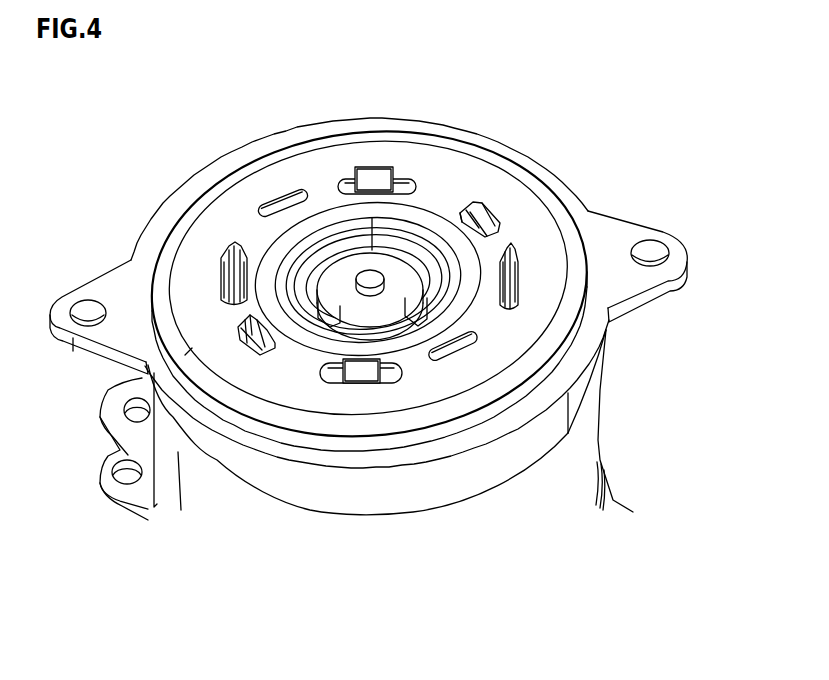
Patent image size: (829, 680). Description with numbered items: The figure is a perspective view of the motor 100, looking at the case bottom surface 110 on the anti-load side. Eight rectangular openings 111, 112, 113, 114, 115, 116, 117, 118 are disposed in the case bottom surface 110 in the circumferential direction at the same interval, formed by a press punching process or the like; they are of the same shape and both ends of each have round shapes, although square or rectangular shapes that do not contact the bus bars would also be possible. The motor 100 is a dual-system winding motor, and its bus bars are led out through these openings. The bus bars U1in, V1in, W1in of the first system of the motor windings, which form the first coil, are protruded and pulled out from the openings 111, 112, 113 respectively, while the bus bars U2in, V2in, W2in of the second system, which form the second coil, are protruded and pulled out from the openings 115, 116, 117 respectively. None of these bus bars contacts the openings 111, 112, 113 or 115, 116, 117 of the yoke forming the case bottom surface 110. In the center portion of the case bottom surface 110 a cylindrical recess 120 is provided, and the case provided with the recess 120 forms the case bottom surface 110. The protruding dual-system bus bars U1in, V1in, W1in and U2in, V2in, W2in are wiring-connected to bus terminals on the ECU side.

The motor 100 is at (202, 503).
The case bottom surface 110 is at (312, 162).
The opening 111 is at (215, 274).
The opening 112 is at (270, 352).
The opening 113 is at (327, 381).
The opening 114 is at (450, 358).
The opening 115 is at (513, 305).
The opening 116 is at (497, 214).
The opening 117 is at (407, 176).
The opening 118 is at (270, 197).
The cylindrical recess 120 is at (417, 268).
The bus bar U1in is at (226, 252).
The bus bar V1in is at (247, 352).
The bus bar W1in is at (359, 381).
The bus bar U2in is at (515, 280).
The bus bar V2in is at (483, 206).
The bus bar W2in is at (370, 165).